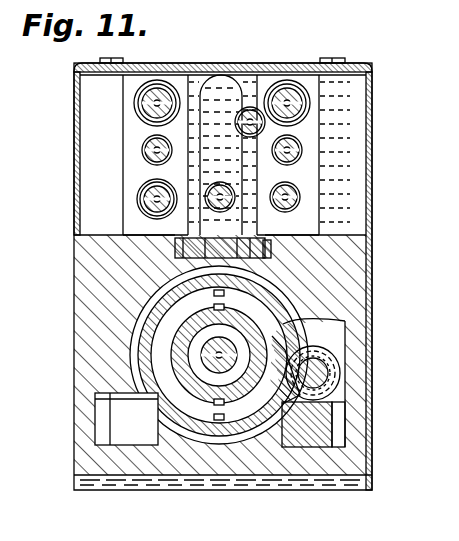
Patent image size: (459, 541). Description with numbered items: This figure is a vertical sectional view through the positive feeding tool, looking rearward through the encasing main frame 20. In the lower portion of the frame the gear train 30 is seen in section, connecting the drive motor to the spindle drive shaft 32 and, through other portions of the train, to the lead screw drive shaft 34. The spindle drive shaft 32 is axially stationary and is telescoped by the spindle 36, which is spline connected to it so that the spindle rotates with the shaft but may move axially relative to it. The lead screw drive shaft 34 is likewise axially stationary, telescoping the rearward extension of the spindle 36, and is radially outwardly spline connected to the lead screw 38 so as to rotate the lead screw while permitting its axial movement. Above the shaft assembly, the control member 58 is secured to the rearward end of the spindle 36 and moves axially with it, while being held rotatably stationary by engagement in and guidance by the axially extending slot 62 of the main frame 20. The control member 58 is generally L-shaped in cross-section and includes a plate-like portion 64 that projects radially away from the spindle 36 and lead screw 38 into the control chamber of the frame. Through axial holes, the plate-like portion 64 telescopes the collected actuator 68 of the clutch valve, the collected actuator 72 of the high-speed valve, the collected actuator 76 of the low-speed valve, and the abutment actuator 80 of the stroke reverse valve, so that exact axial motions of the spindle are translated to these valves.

The main frame 20 is at (73, 277).
The gear train 30 is at (333, 345).
The spindle drive shaft 32 is at (252, 380).
The lead screw drive shaft 34 is at (195, 385).
The spindle 36 is at (215, 380).
The lead screw 38 is at (165, 362).
The control member 58 is at (268, 258).
The slot 62 is at (268, 238).
The plate-like portion 64 is at (133, 127).
The collected actuator 68 is at (143, 198).
The collected actuator 72 is at (157, 90).
The collected actuator 76 is at (291, 92).
The abutment actuator 80 is at (300, 195).